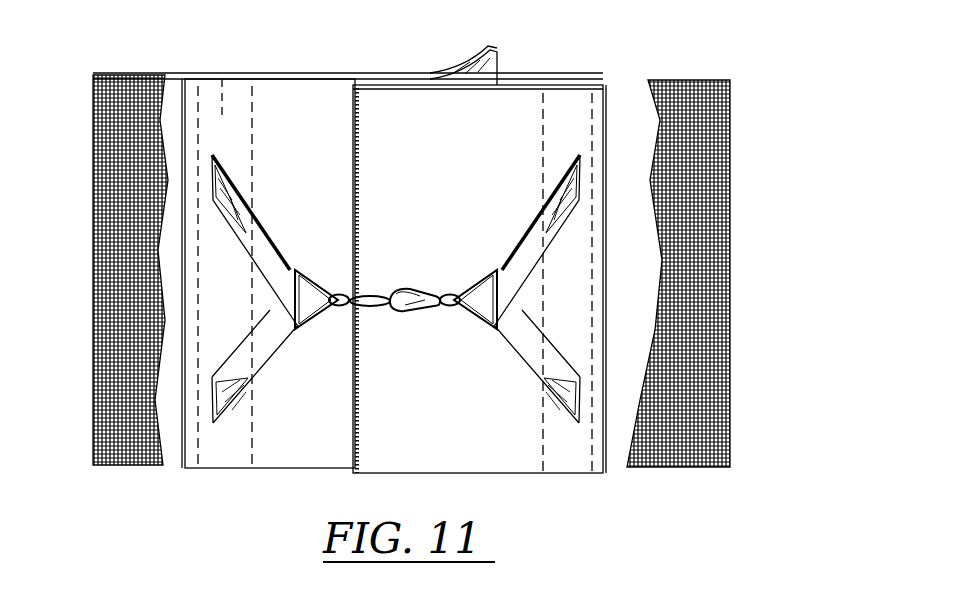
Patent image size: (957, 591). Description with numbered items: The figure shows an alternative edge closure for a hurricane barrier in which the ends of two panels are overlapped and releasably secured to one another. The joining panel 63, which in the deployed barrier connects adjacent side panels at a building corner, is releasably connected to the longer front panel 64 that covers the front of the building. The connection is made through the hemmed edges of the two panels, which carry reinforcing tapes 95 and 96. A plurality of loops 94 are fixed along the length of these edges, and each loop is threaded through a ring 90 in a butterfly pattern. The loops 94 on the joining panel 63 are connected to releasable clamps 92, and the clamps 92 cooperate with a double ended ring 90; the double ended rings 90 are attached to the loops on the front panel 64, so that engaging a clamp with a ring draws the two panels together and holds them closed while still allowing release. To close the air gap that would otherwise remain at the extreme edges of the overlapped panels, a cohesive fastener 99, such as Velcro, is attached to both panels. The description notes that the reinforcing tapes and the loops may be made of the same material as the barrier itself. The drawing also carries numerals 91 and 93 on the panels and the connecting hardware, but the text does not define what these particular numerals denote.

The joining panel 63 is at (687, 453).
The front panel 64 is at (137, 447).
The double ended ring 90 is at (326, 322).
The panel 91 is at (240, 95).
The releasable clamp 92 is at (415, 290).
The chain link 93 is at (367, 296).
The loop 94 is at (268, 258).
The reinforcing tape 95 is at (569, 455).
The reinforcing tape 96 is at (220, 78).
The cohesive fastener 99 is at (497, 75).